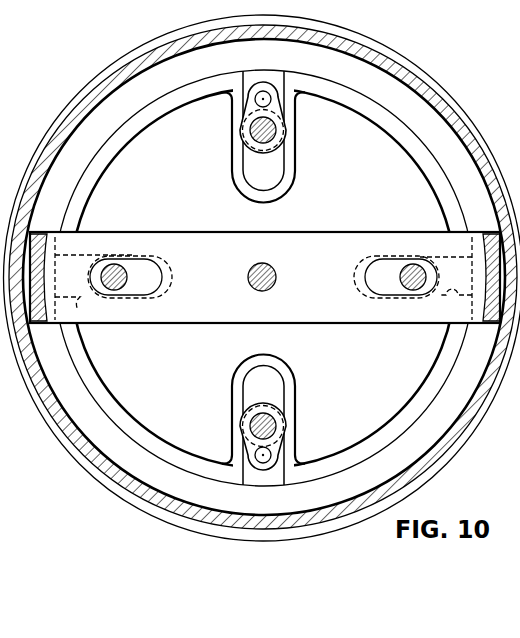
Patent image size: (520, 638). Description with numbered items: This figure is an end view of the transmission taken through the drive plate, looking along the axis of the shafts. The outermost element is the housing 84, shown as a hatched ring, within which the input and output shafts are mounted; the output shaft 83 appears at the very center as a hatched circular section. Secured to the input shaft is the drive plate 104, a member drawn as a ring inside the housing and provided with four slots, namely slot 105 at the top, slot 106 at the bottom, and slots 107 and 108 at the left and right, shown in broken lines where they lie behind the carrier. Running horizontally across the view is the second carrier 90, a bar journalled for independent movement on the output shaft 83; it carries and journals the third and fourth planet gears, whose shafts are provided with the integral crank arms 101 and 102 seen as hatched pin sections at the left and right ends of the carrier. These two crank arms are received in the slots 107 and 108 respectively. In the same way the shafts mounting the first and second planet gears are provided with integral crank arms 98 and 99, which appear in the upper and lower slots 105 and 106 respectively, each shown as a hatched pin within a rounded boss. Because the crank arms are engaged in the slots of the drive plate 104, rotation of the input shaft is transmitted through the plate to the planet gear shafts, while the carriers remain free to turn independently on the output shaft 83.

The housing 84 is at (186, 41).
The drive plate 104 is at (404, 126).
The slot 105 is at (249, 74).
The slot 106 is at (248, 480).
The crank arm 98 is at (286, 115).
The crank arm 99 is at (280, 446).
The second carrier 90 is at (209, 314).
The slot 107 is at (80, 300).
The slot 108 is at (452, 300).
The crank arm 101 is at (134, 258).
The crank arm 102 is at (411, 262).
The output shaft 83 is at (274, 268).